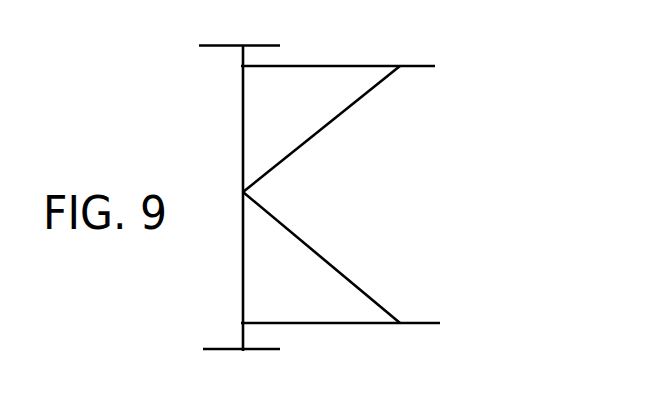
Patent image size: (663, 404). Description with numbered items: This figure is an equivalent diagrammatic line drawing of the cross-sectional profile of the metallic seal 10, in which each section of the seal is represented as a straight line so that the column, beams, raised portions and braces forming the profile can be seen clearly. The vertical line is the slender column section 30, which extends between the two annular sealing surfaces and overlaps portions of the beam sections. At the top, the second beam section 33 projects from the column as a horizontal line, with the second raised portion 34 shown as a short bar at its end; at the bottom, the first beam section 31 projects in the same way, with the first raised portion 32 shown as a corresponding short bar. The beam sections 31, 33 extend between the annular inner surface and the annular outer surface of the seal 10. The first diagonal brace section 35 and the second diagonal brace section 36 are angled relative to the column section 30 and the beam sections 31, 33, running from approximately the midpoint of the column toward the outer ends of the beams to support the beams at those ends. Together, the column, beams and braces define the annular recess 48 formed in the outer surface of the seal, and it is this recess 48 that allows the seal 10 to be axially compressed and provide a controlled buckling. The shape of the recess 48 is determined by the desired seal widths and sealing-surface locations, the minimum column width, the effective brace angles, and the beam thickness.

The metallic seal 10 is at (355, 197).
The slender column section 30 is at (241, 123).
The first beam section 31 is at (353, 325).
The first raised portion 32 is at (228, 350).
The second beam section 33 is at (350, 66).
The second raised portion 34 is at (225, 45).
The first diagonal brace section 35 is at (352, 280).
The second diagonal brace section 36 is at (357, 102).
The annular recess 48 is at (292, 198).